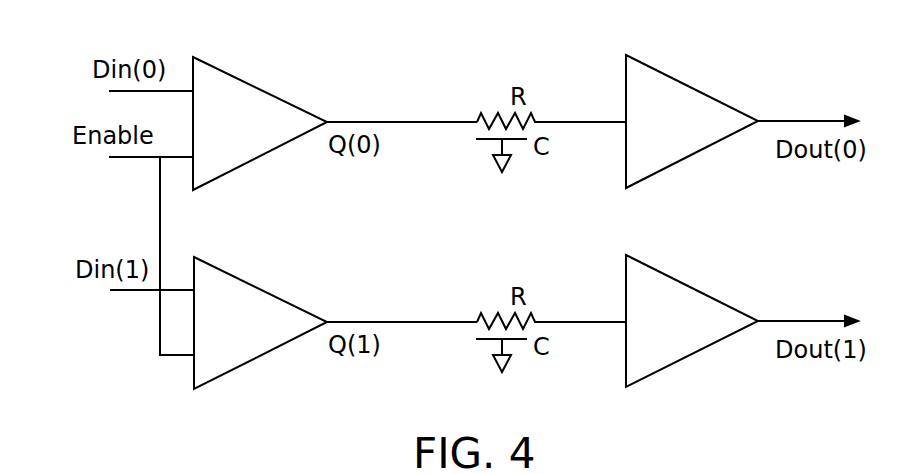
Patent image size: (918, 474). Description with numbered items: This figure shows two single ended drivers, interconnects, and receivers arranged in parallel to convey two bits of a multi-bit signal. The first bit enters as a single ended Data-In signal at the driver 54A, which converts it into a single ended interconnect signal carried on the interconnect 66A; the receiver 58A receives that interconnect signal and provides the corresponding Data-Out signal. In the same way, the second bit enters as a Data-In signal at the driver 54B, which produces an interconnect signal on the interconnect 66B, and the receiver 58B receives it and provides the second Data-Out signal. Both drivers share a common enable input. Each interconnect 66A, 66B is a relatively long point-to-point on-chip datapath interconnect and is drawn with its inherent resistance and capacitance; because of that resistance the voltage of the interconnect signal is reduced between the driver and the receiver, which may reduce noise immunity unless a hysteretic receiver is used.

The driver 54A is at (262, 90).
The driver 54B is at (263, 290).
The receiver 58A is at (692, 88).
The receiver 58B is at (692, 288).
The interconnect 66A is at (413, 122).
The interconnect 66B is at (413, 322).